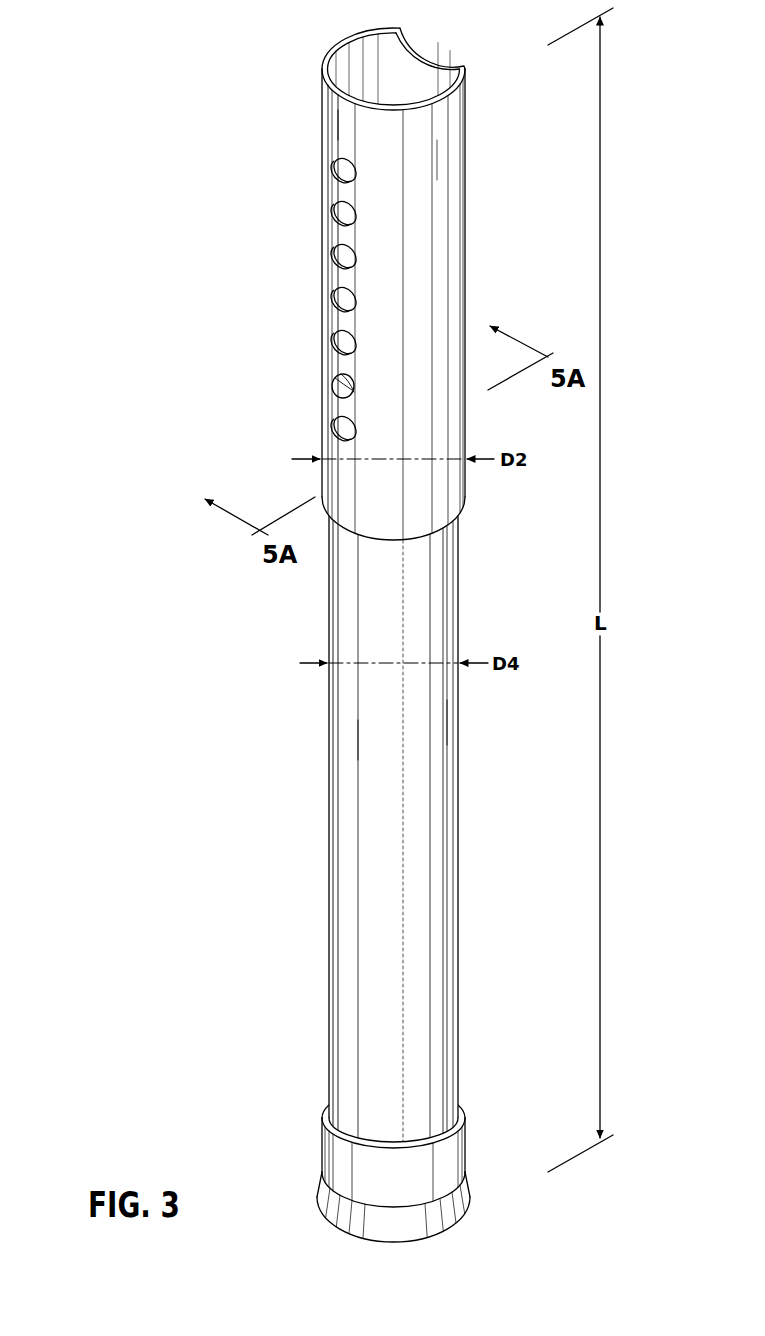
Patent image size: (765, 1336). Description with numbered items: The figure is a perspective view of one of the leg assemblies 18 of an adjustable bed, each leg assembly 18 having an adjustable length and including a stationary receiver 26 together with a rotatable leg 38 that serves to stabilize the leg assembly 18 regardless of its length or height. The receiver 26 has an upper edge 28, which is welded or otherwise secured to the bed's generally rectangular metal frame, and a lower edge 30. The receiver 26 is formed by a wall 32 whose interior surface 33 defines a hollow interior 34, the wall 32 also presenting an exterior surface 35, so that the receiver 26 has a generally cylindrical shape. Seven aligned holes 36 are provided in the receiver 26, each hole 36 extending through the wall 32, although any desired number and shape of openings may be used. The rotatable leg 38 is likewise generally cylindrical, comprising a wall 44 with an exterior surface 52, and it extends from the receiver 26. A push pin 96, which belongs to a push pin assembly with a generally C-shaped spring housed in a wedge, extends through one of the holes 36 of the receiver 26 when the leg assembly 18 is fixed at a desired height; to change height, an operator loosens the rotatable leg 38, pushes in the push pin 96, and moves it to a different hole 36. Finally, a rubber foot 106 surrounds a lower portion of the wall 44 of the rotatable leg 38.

The leg assembly 18 is at (268, 90).
The receiver 26 is at (469, 242).
The upper edge 28 is at (467, 72).
The lower edge 30 is at (461, 505).
The wall 32 is at (438, 160).
The interior surface 33 is at (355, 81).
The hollow interior 34 is at (393, 69).
The exterior surface 35 is at (349, 117).
The holes 36 is at (338, 209).
The rotatable leg 38 is at (461, 820).
The wall 44 is at (437, 722).
The exterior surface 52 is at (370, 729).
The push pin 96 is at (330, 388).
The rubber foot 106 is at (403, 878).